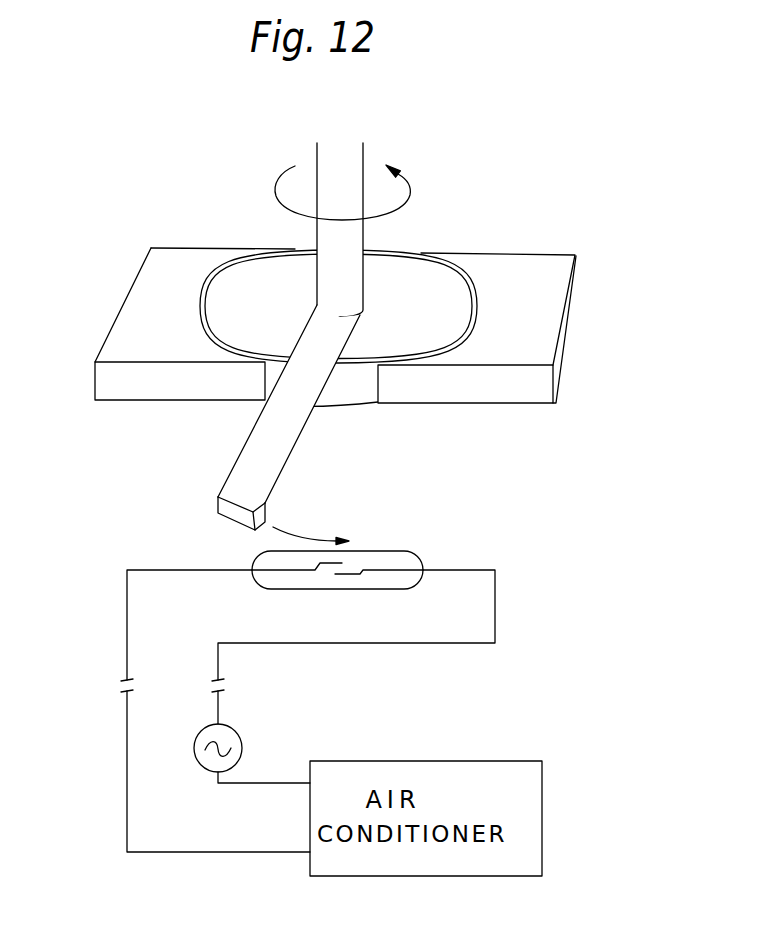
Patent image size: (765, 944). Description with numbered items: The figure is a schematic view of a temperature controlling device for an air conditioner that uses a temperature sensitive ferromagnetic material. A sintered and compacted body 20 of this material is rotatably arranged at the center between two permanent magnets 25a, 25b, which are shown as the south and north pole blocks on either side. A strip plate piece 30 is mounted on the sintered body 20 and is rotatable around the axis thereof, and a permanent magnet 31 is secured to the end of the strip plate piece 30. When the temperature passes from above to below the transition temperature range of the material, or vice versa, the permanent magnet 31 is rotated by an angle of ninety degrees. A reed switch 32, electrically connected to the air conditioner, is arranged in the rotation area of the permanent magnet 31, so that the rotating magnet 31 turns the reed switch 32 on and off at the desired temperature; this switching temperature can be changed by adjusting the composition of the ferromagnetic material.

The sintered and compacted body 20 is at (358, 385).
The permanent magnet 25a is at (103, 345).
The permanent magnet 25b is at (567, 345).
The strip plate piece 30 is at (272, 455).
The permanent magnet 31 is at (218, 507).
The reed switch 32 is at (420, 553).